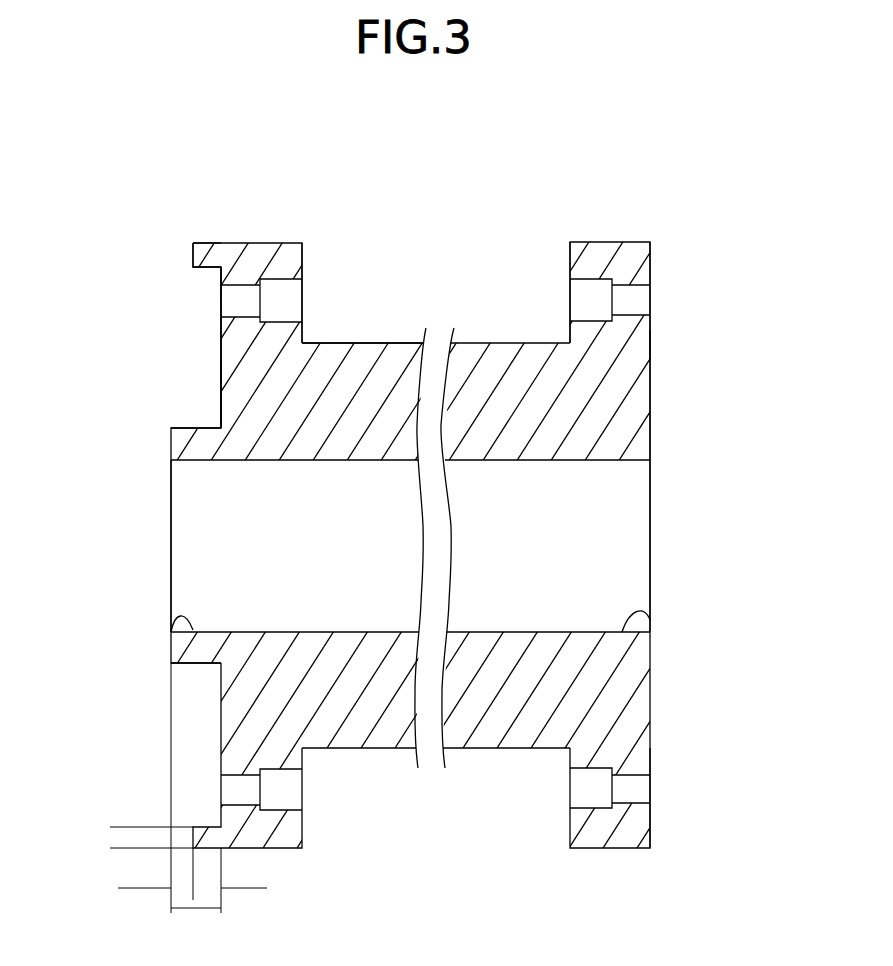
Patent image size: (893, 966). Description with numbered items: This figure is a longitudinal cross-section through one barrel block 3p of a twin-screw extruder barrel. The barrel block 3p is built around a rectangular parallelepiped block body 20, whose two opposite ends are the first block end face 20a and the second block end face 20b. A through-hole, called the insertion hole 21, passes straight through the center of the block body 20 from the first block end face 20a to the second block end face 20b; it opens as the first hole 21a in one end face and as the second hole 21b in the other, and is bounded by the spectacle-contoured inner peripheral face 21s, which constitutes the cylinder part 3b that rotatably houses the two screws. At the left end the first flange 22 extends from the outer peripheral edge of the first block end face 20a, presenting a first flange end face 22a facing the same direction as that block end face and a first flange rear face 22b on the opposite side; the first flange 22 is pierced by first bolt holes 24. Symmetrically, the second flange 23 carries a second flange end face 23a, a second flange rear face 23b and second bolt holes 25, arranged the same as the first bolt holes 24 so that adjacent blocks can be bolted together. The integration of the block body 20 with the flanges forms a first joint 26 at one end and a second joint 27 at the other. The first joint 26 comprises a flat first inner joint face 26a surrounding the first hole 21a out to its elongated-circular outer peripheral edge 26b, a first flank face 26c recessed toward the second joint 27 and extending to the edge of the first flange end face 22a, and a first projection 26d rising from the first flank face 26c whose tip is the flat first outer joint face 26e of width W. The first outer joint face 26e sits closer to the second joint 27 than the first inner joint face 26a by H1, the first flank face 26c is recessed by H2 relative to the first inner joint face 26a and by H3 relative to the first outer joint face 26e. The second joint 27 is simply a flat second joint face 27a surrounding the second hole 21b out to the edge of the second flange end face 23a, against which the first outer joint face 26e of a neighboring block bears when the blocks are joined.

The barrel block 3p is at (419, 214).
The cylinder part 3b is at (650, 620).
The block body 20 is at (400, 355).
The first block end face 20a is at (142, 396).
The second block end face 20b is at (664, 373).
The through-hole (insertion hole) 21 is at (185, 547).
The first hole 21a is at (170, 587).
The second hole 21b is at (650, 573).
The inner peripheral face 21s is at (171, 632).
The first flange 22 is at (257, 243).
The first flange end face 22a is at (142, 279).
The first flange rear face 22b is at (313, 272).
The second flange 23 is at (600, 250).
The second flange end face 23a is at (664, 277).
The second flange rear face 23b is at (557, 275).
The first bolt holes 24 is at (233, 789).
The second bolt holes 25 is at (632, 788).
The first joint 26 is at (136, 462).
The first inner joint face 26a is at (170, 438).
The outer peripheral edge of first inner joint face 26b is at (170, 663).
The first flank face 26c is at (216, 345).
The first projection 26d is at (205, 252).
The first outer joint face 26e is at (192, 250).
The second joint 27 is at (671, 448).
The second joint face 27a is at (652, 343).
The width of first outer joint face W is at (117, 828).
The offset between first outer joint face and first inner joint face H1 is at (170, 888).
The offset between first flank face and first inner joint face H2 is at (220, 908).
The offset between first flank face and first outer joint face H3 is at (194, 888).